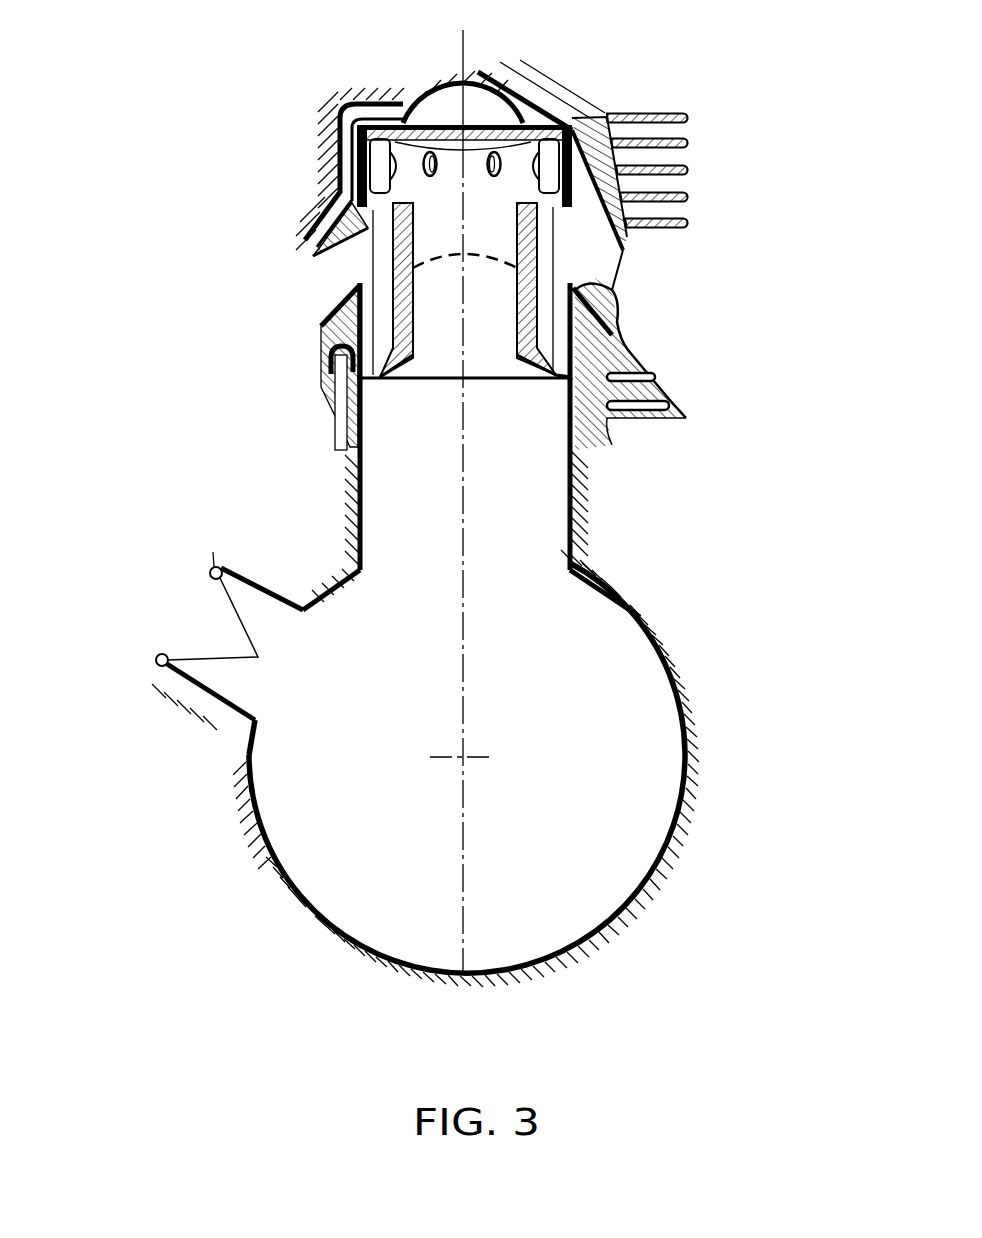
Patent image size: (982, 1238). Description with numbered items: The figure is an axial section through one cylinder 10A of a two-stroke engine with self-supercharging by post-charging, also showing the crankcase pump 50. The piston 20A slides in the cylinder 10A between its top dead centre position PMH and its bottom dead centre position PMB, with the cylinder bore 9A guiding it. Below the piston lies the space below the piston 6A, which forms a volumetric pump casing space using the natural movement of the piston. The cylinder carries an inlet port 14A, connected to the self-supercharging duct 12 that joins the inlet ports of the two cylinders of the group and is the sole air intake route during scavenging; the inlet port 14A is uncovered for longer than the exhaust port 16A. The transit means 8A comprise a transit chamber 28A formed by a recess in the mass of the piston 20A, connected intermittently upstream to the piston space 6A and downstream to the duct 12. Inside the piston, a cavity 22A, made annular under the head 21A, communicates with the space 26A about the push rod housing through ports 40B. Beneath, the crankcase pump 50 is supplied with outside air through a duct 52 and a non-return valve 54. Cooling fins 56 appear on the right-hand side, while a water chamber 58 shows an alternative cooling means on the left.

The space below the piston 6A is at (540, 530).
The transit means 8A is at (325, 347).
The cylinder bore 9A is at (560, 212).
The cylinder 10A is at (586, 112).
The self-supercharging duct 12 is at (322, 305).
The inlet port 14A is at (357, 285).
The exhaust port 16A is at (438, 330).
The piston 20A is at (515, 252).
The head of the piston 21A is at (445, 88).
The cavity 22A is at (350, 148).
The space about the housing of the push rod 26A is at (330, 202).
The transit chamber 28A is at (612, 444).
The ports 40B is at (488, 177).
The crankcase pump 50 is at (690, 706).
The duct 52 is at (157, 665).
The non-return valve 54 is at (233, 610).
The fins 56 is at (680, 220).
The water chamber 58 is at (360, 212).
The top dead center plane PMH is at (590, 132).
The bottom dead center plane PMB is at (535, 328).